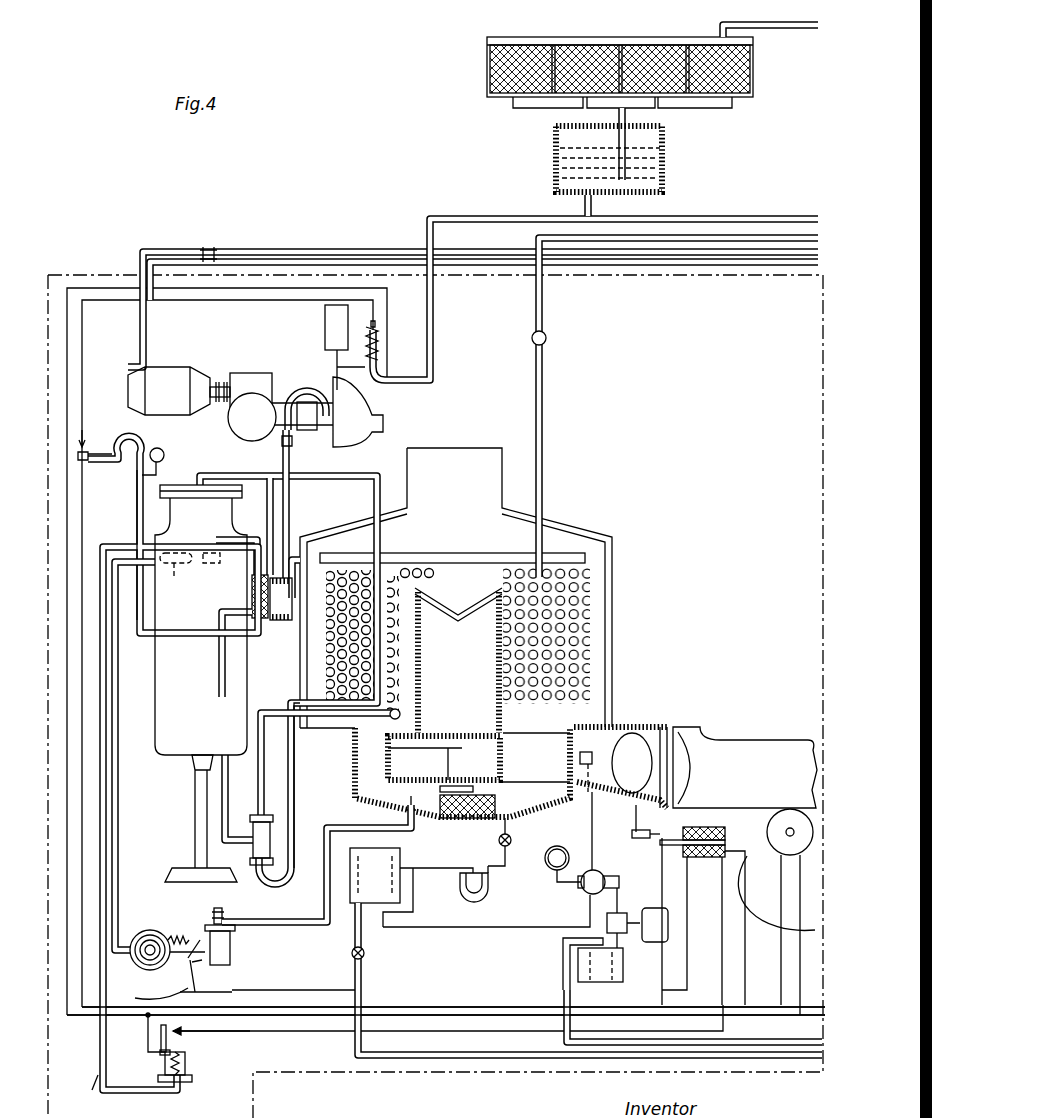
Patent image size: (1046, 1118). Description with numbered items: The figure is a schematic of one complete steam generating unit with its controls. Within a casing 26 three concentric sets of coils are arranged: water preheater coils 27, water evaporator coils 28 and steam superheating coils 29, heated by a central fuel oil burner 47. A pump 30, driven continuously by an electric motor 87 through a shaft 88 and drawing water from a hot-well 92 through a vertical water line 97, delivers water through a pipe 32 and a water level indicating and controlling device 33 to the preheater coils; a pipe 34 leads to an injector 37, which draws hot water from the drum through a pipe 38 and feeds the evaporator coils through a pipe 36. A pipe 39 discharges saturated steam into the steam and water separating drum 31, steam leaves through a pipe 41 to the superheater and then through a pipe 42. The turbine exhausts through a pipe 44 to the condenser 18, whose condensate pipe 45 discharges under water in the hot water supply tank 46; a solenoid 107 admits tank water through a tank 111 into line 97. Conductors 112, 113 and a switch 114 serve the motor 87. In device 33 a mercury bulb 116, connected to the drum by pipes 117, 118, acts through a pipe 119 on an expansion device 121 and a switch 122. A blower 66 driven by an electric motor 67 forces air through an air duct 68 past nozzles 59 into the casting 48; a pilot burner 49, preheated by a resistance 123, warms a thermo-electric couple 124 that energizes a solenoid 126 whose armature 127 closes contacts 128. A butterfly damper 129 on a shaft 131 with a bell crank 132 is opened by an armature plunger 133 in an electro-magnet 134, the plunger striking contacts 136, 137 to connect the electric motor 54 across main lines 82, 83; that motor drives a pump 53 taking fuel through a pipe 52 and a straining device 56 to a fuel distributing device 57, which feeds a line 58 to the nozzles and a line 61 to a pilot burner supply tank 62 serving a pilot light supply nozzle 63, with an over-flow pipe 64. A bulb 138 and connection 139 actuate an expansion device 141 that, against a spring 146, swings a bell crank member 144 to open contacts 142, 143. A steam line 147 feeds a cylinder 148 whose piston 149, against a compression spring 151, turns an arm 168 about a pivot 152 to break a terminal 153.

The condenser 18 is at (585, 45).
The exhaust pipe 44 is at (795, 27).
The condensate pipe 45 is at (628, 136).
The hot water supply tank 46 is at (650, 170).
The switch 114 is at (212, 252).
The conductor 112 is at (683, 254).
The conductor 113 is at (737, 264).
The hot-well 92 is at (325, 317).
The solenoid 107 is at (378, 335).
The electric motor 87 is at (168, 378).
The shaft 88 is at (218, 385).
The vertical water line 97 is at (332, 385).
The tank 111 is at (368, 380).
The expansion device 121 is at (134, 440).
The pipe 42 is at (545, 418).
The pump 30 is at (303, 430).
The pipe 41 is at (358, 472).
The switch 122 is at (86, 462).
The pipe 119 is at (134, 515).
The pipe 117 is at (228, 540).
The pipe 39 is at (270, 555).
The pipe 32 is at (290, 502).
The water evaporator coils 28 is at (508, 568).
The bulb 138 is at (190, 575).
The mercury bulb 116 is at (252, 596).
The water preheater coils 27 is at (588, 578).
The casing 26 is at (610, 636).
The water level indicating and controlling device 33 is at (278, 620).
The fuel oil burner 47 is at (428, 628).
The pipe 118 is at (220, 680).
The butterfly damper 129 is at (632, 735).
The air duct 68 is at (664, 740).
The blower 66 is at (783, 740).
The steam and water separating drum 31 is at (160, 722).
The pipe 36 is at (267, 766).
The pipe 34 is at (294, 783).
The steam superheating coils 29 is at (545, 715).
The nozzles 59 is at (595, 755).
The electric motor 67 is at (790, 820).
The casting 48 is at (494, 780).
The pilot burner 49 is at (445, 786).
The thermo-electric couple 124 is at (408, 806).
The connection 139 is at (118, 778).
The pipe 38 is at (228, 805).
The injector 37 is at (252, 845).
The pilot light supply nozzle 63 is at (501, 836).
The line 58 is at (590, 822).
The shaft 131 is at (634, 822).
The bell crank 132 is at (648, 834).
The armature plunger 133 is at (700, 830).
The electro-magnet 134 is at (715, 840).
The contact 136 is at (738, 850).
The resistance 123 is at (455, 818).
The pilot burner supply tank 62 is at (395, 870).
The line 61 is at (512, 926).
The fuel distributing device 57 is at (585, 888).
The electric motor 54 is at (655, 908).
The pump 53 is at (622, 915).
The contact 137 is at (750, 860).
The expansion device 141 is at (150, 930).
The armature 127 is at (200, 935).
The solenoid 126 is at (224, 918).
The spring 146 is at (185, 938).
The contacts 128 is at (232, 940).
The over-flow pipe 64 is at (365, 955).
The main line 82 is at (432, 1005).
The main line 83 is at (482, 1007).
The pipe 52 is at (562, 952).
The straining device 56 is at (623, 962).
The contact 142 is at (146, 994).
The bell crank member 144 is at (247, 990).
The contact 143 is at (198, 990).
The arm 168 is at (160, 1040).
The terminal 153 is at (185, 1032).
The compression spring 151 is at (185, 1054).
The pivot 152 is at (160, 1056).
The piston 149 is at (186, 1064).
The cylinder 148 is at (192, 1080).
The steam line 147 is at (98, 1080).